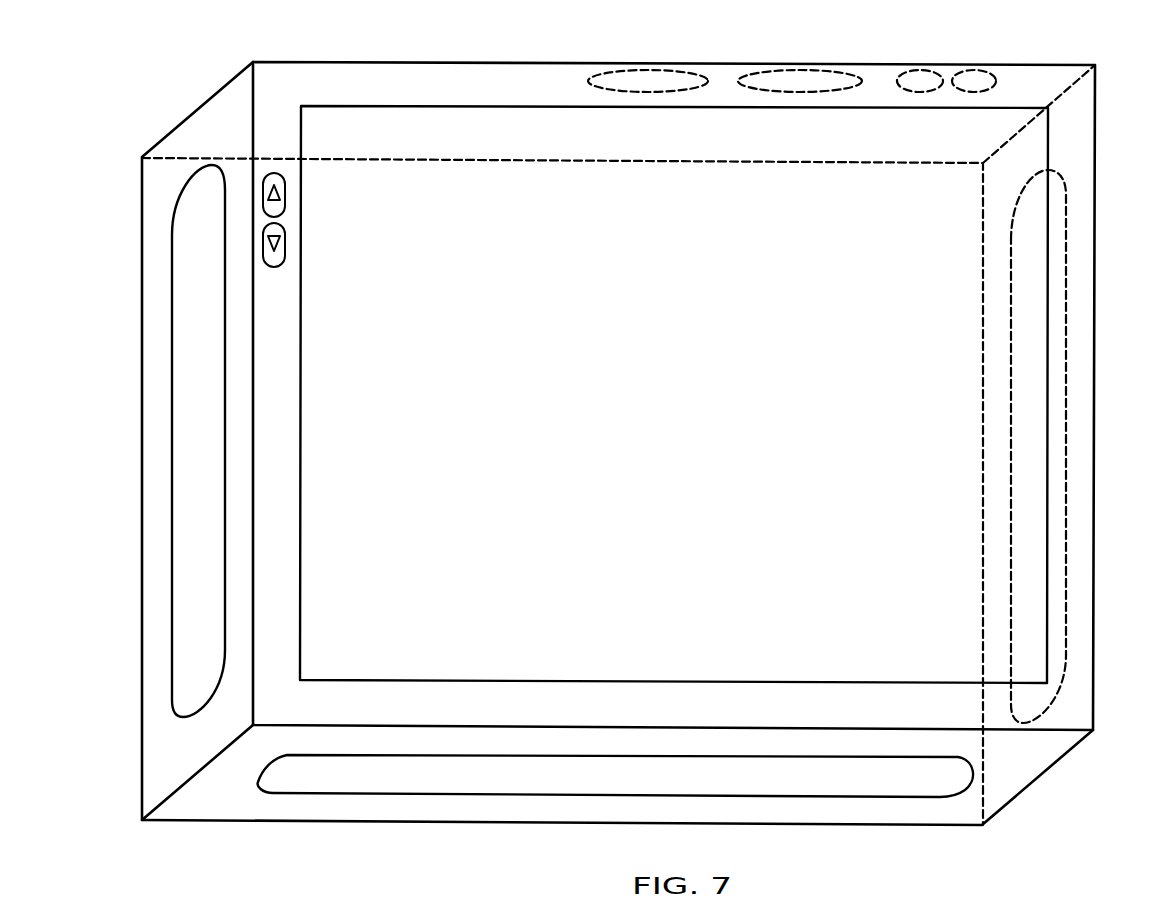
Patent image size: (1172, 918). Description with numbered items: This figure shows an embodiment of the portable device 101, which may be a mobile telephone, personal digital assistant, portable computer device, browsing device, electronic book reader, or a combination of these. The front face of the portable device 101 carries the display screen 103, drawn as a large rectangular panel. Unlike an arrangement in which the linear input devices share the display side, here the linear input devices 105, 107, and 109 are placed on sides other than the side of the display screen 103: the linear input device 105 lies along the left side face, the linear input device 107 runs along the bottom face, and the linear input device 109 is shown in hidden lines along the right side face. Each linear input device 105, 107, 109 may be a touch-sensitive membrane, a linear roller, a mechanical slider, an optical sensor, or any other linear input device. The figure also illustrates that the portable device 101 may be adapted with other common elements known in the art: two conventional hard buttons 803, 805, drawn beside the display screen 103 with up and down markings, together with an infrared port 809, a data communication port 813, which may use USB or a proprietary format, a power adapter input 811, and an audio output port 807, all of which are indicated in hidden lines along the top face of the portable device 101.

The portable device 101 is at (330, 61).
The display screen 103 is at (450, 105).
The linear input device 105 is at (193, 224).
The linear input device 107 is at (370, 775).
The linear input device 109 is at (1055, 642).
The hard button 803 is at (285, 192).
The hard button 805 is at (285, 242).
The audio output port 807 is at (978, 72).
The infrared port 809 is at (648, 72).
The power adapter input 811 is at (925, 72).
The data communication port 813 is at (800, 72).